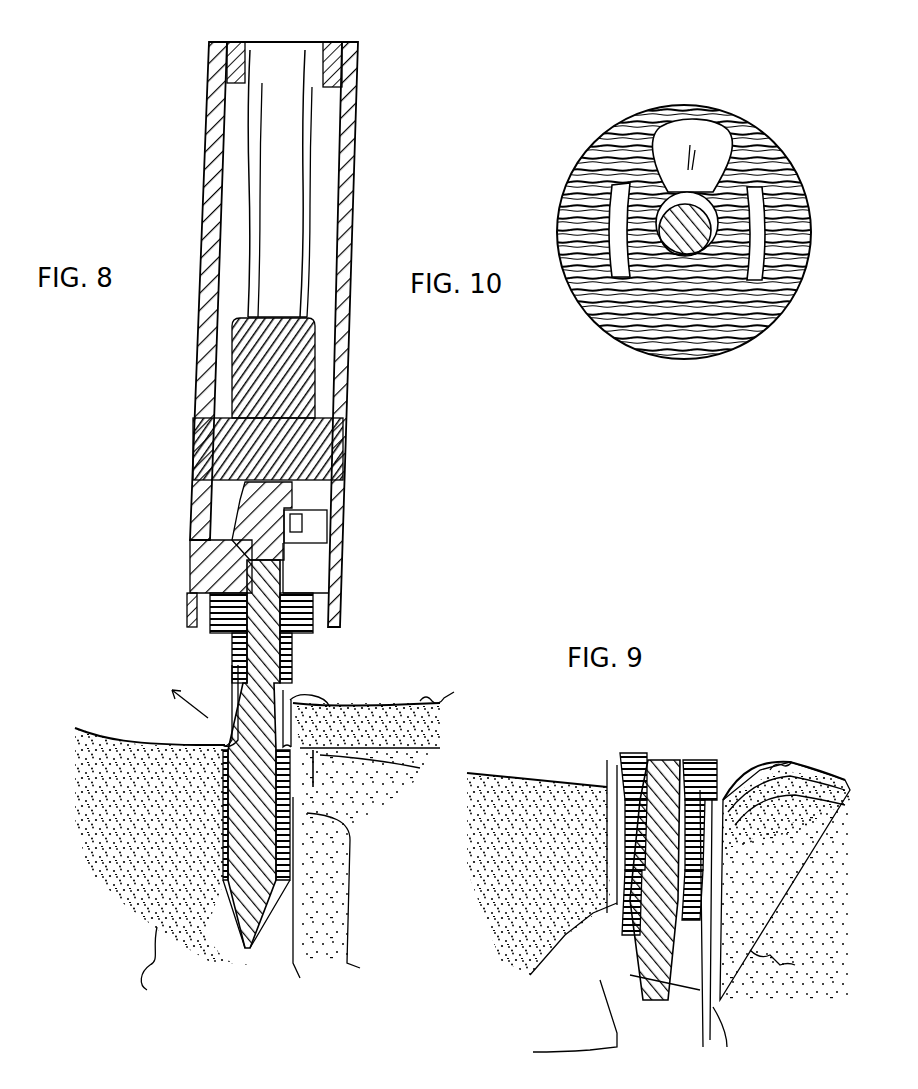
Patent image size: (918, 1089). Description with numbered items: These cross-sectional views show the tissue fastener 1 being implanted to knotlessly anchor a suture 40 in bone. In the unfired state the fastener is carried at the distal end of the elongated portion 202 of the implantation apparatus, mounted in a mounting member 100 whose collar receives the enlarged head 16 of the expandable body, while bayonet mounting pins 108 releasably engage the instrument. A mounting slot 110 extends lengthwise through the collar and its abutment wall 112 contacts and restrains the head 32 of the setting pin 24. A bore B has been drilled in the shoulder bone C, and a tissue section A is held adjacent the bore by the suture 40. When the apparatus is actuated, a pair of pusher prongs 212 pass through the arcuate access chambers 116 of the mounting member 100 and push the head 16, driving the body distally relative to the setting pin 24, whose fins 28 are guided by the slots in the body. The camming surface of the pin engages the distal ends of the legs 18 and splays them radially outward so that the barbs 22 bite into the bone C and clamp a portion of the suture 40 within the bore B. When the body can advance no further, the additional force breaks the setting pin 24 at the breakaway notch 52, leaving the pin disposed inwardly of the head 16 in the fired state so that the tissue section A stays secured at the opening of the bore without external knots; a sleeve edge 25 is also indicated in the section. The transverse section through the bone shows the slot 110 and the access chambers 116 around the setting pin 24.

In FIG. 8, the surgical instrument assembly 1 is at (394, 47).
In FIG. 8, the elongated portion 202 is at (357, 163).
In FIG. 8, the pusher prongs 212 is at (290, 228).
In FIG. 8, the mounting member 100 is at (273, 368).
In FIG. 10, the mounting member 100 is at (642, 112).
In FIG. 8, the bayonet mounting pins 108 is at (343, 440).
In FIG. 8, the head 32 is at (262, 483).
In FIG. 8, the abutment wall 112 is at (327, 522).
In FIG. 8, the enlarged head 16 is at (212, 636).
In FIG. 9, the enlarged head 16 is at (636, 752).
In FIG. 8, the setting pin 24 is at (300, 655).
In FIG. 10, the setting pin 24 is at (615, 128).
In FIG. 9, the setting pin 24 is at (690, 765).
In FIG. 8, the suture 40 is at (227, 738).
In FIG. 9, the suture 40 is at (605, 752).
In FIG. 8, the sleeve edge 25 is at (175, 697).
In FIG. 8, the legs 18 is at (227, 723).
In FIG. 8, the barbs 22 is at (345, 703).
In FIG. 9, the barbs 22 is at (562, 948).
In FIG. 8, the fins 28 is at (365, 867).
In FIG. 9, the breakaway notch 52 is at (662, 770).
In FIG. 10, the mounting slot 110 is at (717, 133).
In FIG. 10, the access chambers 116 is at (568, 230).
In FIG. 8, the tissue section A is at (445, 690).
In FIG. 9, the tissue section A is at (785, 872).
In FIG. 8, the bore B is at (299, 902).
In FIG. 9, the bore B is at (607, 1024).
In FIG. 8, the bone C is at (162, 866).
In FIG. 9, the bone C is at (639, 879).